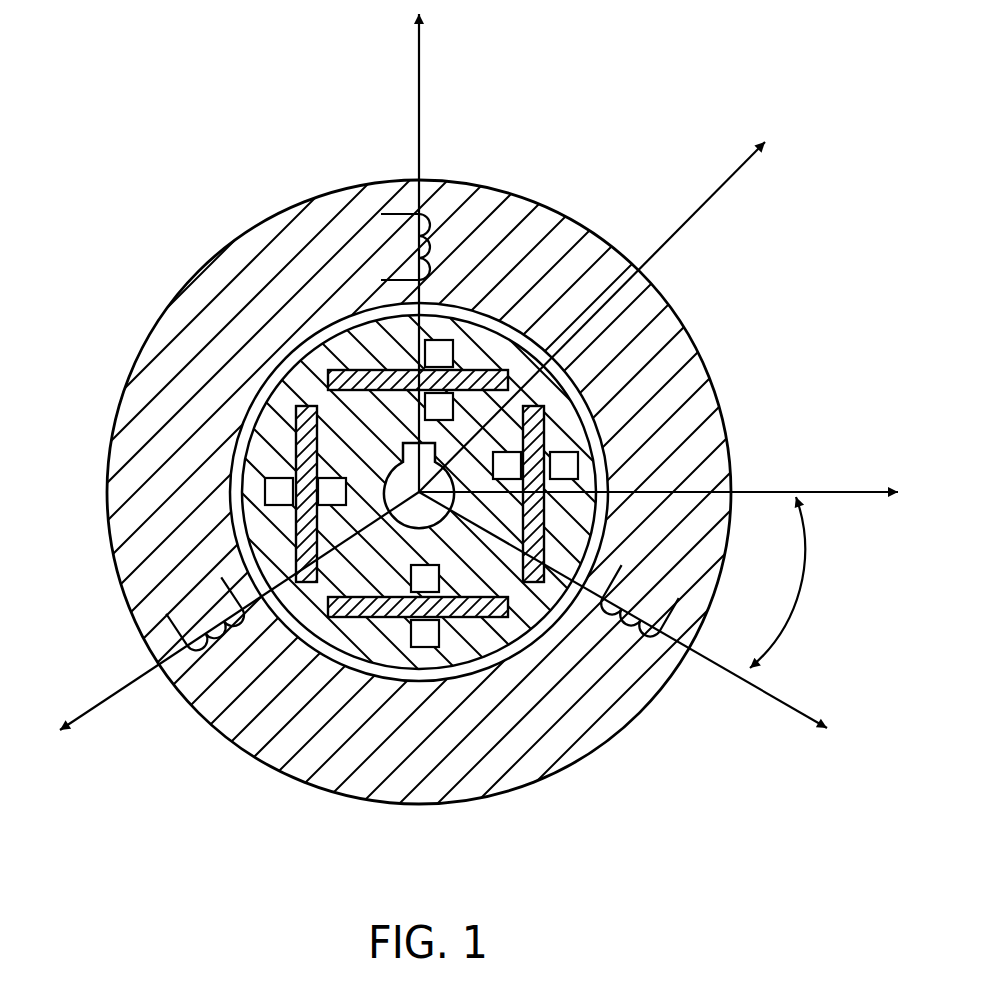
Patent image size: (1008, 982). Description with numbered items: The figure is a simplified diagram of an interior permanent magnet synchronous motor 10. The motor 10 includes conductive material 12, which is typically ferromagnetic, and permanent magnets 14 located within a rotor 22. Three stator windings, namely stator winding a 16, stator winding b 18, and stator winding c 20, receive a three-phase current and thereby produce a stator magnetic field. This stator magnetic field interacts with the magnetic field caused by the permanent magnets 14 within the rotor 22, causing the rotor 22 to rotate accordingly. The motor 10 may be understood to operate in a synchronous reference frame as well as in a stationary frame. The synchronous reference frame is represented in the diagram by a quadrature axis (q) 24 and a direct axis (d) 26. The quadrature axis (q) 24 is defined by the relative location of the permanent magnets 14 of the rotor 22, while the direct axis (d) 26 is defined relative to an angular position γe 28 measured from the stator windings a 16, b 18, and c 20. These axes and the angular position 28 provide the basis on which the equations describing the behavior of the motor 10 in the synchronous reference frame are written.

The interior permanent magnet synchronous motor 10 is at (118, 272).
The conductive material 12 is at (246, 240).
The permanent magnets 14 is at (356, 392).
The stator winding a 16 is at (758, 690).
The stator winding b 18 is at (420, 90).
The stator winding c 20 is at (110, 697).
The rotor 22 is at (576, 418).
The quadrature axis (q) 24 is at (722, 190).
The direct axis (d) 26 is at (796, 490).
The angular position γe 28 is at (800, 633).